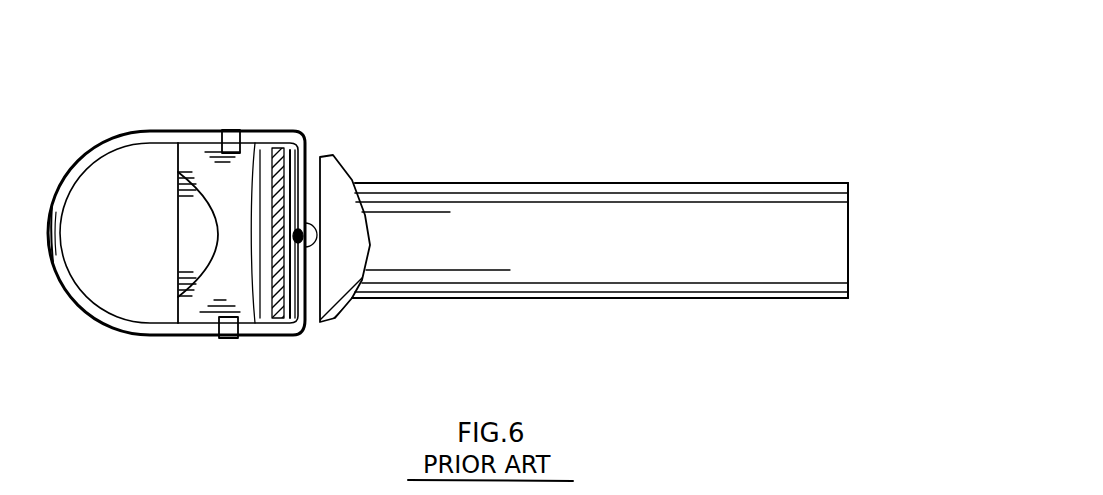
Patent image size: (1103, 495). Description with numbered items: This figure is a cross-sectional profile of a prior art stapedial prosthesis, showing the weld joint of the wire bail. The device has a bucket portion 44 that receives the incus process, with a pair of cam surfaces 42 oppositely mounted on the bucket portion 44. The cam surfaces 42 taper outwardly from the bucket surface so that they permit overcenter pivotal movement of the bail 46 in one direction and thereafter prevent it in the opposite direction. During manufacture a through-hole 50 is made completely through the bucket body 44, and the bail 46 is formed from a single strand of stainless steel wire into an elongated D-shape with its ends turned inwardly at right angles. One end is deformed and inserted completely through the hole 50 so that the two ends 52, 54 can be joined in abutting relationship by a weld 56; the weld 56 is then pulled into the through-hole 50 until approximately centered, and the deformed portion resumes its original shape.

The cam surfaces 42 is at (233, 130).
The bucket portion 44 is at (178, 315).
The bail 46 is at (100, 148).
The through-hole 50 is at (300, 160).
The end of bail 52 is at (318, 318).
The end of bail 54 is at (323, 170).
The weld 56 is at (333, 297).